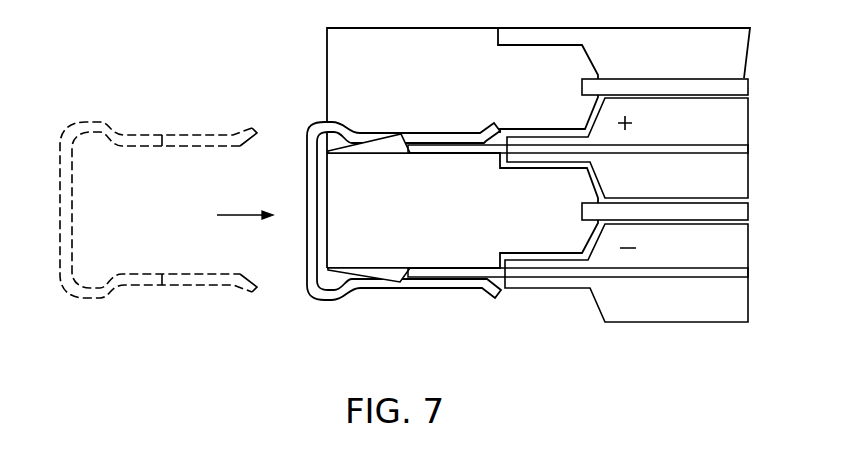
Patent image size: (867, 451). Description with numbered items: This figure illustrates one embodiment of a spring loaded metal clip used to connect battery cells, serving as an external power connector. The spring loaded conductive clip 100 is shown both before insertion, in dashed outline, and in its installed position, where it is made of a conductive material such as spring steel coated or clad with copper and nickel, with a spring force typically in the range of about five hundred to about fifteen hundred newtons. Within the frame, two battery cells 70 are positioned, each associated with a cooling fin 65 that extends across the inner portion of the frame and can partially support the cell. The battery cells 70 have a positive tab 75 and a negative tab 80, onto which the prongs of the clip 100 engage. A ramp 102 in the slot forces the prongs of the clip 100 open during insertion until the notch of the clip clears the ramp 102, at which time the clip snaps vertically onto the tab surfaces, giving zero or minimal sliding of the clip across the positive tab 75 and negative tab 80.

The cooling fin 65 is at (737, 88).
The battery cells 70 is at (737, 123).
The positive tabs 75 is at (441, 149).
The negative tabs 80 is at (422, 268).
The spring loaded conductive clip 100 is at (92, 300).
The ramp 102 is at (388, 148).